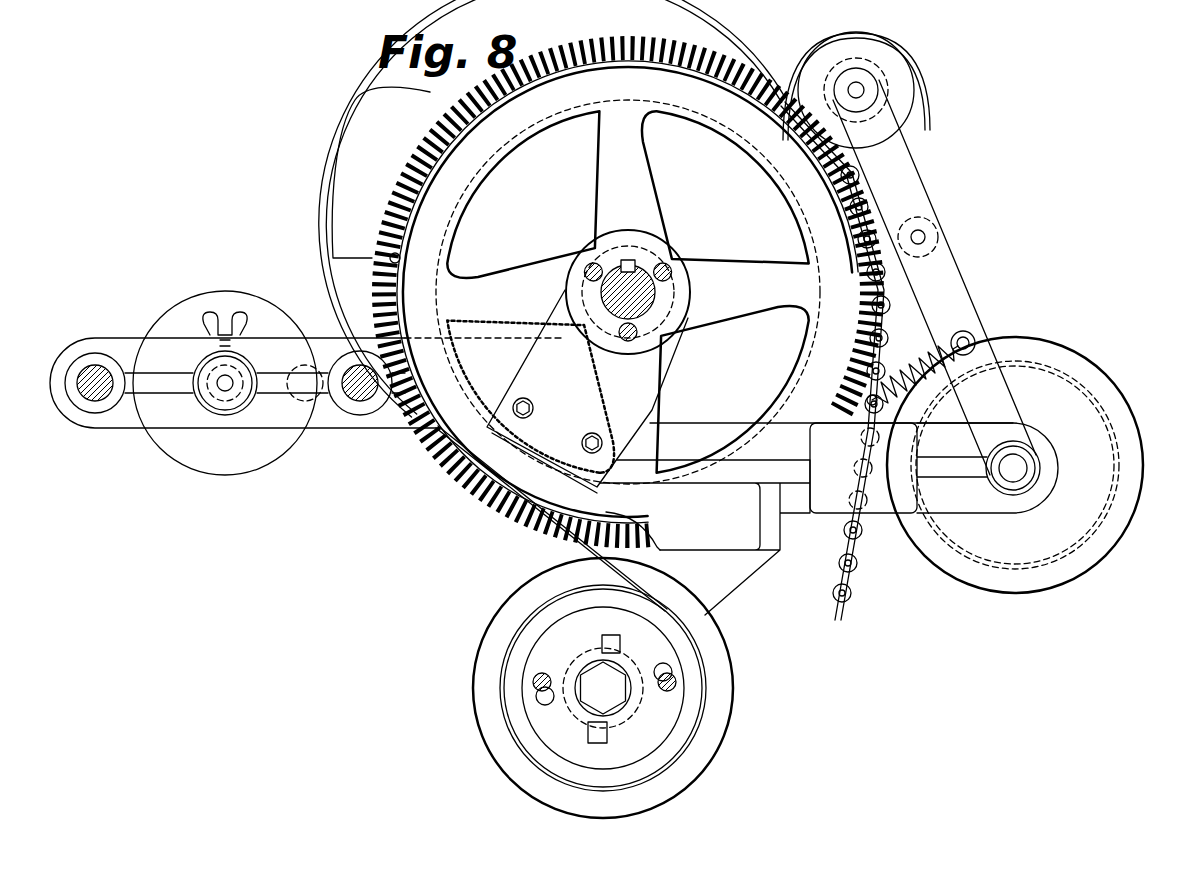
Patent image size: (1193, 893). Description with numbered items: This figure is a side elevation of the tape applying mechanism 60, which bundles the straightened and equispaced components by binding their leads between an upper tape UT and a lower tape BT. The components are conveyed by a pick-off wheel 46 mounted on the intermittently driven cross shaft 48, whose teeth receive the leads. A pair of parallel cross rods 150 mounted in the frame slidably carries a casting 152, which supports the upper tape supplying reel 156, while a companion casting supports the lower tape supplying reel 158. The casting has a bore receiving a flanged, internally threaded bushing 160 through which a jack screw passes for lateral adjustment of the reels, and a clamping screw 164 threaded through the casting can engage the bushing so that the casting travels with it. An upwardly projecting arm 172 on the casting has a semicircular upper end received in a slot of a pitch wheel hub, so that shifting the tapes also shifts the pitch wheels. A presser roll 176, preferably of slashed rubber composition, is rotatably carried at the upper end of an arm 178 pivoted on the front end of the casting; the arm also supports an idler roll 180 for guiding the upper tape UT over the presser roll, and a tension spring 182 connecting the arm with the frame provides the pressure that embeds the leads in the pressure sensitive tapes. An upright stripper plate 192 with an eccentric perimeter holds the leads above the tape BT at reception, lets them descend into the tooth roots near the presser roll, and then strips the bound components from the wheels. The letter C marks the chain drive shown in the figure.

The pick-off wheel 46 is at (648, 194).
The cross shaft 48 is at (650, 270).
The tape applying mechanism 60 is at (998, 680).
The cross rod 150 is at (95, 400).
The casting 152 is at (308, 420).
The upper tape supplying reel 156 is at (1122, 402).
The lower tape supplying reel 158 is at (475, 665).
The bushing 160 is at (228, 405).
The clamping screw 164 is at (246, 322).
The arm 172 is at (655, 386).
The presser roll 176 is at (916, 62).
The arm 178 is at (938, 200).
The idler roll 180 is at (926, 243).
The tension spring 182 is at (966, 362).
The stripper plate 192 is at (333, 258).
The chain C is at (400, 150).
The lower tape BT is at (715, 691).
The upper tape UT is at (945, 128).